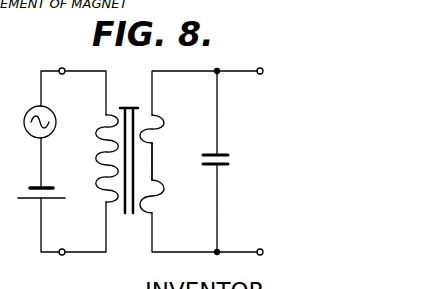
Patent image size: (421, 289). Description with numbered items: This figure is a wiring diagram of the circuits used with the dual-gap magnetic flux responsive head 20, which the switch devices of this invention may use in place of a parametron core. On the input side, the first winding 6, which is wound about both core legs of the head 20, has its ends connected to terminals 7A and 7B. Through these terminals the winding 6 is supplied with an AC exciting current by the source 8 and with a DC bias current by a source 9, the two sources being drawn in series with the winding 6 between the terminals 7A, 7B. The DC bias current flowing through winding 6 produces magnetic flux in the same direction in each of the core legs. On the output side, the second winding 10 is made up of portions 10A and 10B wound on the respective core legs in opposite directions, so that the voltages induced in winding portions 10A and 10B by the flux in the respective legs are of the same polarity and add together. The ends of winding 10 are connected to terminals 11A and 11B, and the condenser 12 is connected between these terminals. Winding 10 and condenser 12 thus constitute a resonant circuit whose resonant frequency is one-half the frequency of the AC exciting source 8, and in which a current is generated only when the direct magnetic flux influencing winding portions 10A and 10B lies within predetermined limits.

The terminal 7A is at (62, 68).
The terminal 7B is at (62, 256).
The AC exciting source 8 is at (56, 124).
The DC bias source 9 is at (55, 190).
The first winding 6 is at (100, 196).
The dual-gap magnetic flux responsive head 20 is at (130, 105).
The winding portion 10A is at (163, 126).
The winding portion 10B is at (162, 196).
The second winding 10 is at (178, 207).
The terminal 11A is at (262, 68).
The terminal 11B is at (268, 242).
The condenser 12 is at (229, 160).